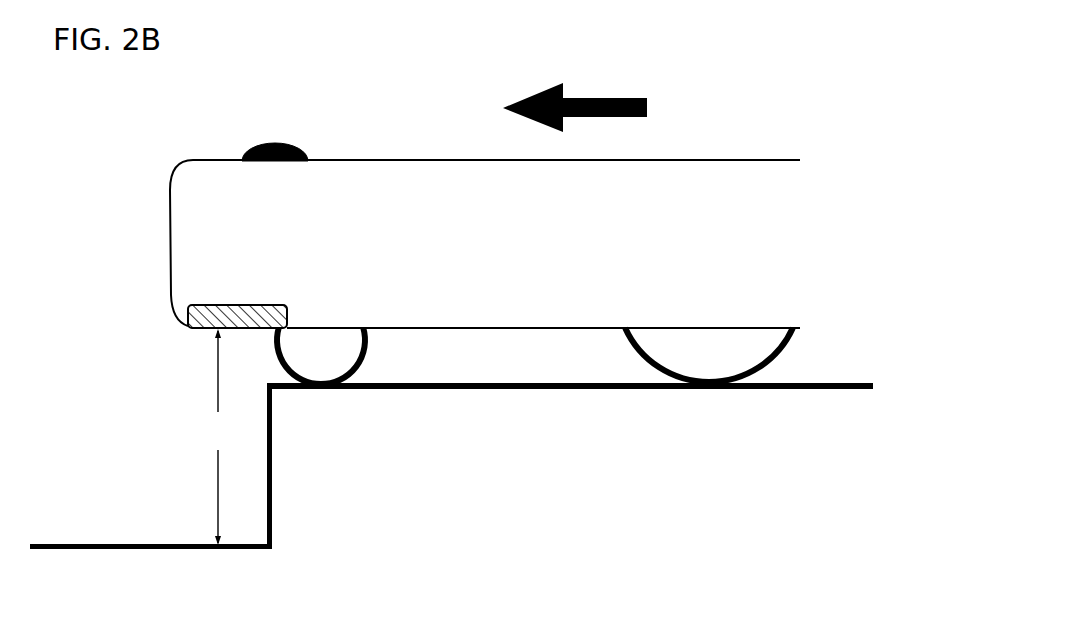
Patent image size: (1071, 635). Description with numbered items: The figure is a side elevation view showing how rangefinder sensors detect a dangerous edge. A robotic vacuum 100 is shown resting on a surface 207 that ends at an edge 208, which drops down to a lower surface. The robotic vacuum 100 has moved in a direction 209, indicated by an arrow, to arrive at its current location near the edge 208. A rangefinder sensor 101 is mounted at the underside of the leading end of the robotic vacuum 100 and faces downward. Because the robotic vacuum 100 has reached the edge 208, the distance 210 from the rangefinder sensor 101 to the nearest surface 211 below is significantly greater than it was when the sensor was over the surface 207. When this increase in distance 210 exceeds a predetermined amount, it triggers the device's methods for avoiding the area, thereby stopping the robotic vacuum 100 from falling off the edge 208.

The robotic vacuum 100 is at (754, 127).
The rangefinder sensor 101 is at (190, 310).
The surface 207 is at (775, 392).
The edge 208 is at (272, 465).
The direction 209 is at (575, 93).
The distance 210 is at (219, 437).
The nearest surface 211 is at (151, 564).